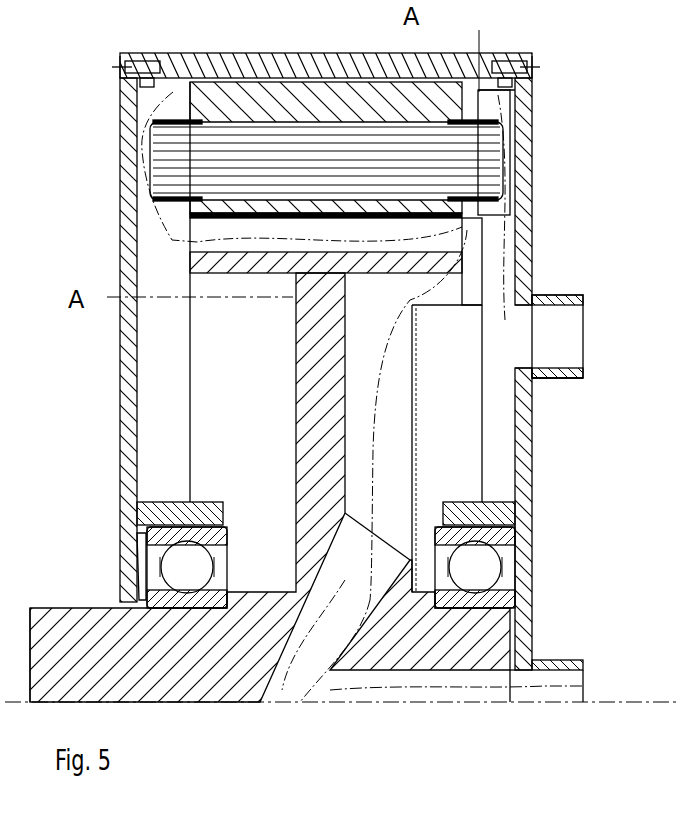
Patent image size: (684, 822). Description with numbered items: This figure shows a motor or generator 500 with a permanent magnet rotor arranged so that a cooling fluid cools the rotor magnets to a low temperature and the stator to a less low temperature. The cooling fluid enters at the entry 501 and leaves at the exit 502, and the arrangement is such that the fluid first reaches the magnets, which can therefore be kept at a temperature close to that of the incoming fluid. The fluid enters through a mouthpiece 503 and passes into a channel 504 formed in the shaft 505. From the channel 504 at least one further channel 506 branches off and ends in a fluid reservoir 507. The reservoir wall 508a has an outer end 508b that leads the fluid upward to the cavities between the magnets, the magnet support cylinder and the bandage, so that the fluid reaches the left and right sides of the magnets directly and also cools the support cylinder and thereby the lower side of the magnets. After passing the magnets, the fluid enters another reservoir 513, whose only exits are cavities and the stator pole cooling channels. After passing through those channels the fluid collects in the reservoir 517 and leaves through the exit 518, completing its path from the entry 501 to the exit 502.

The motor or generator 500 is at (270, 335).
The cooling fluid entry 501 is at (583, 686).
The cooling fluid exit 502 is at (537, 339).
The mouthpiece 503 is at (546, 694).
The channel 504 is at (491, 694).
The shaft 505 is at (140, 683).
The further channel 506 is at (345, 628).
The fluid reservoir 507 is at (393, 303).
The reservoir wall 508a is at (416, 470).
The outer end of reservoir wall 508b is at (537, 227).
The reservoir 513 is at (216, 335).
The reservoir 517 is at (447, 405).
The exit 518 is at (560, 368).